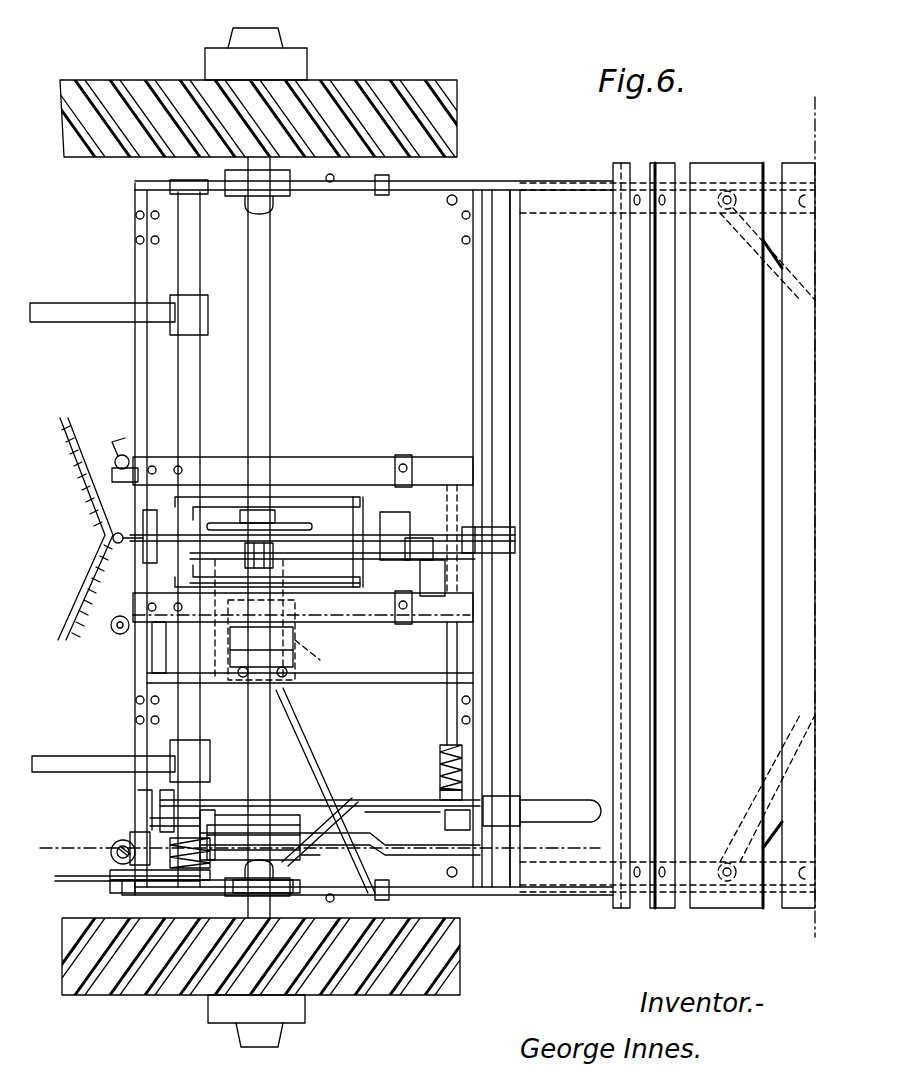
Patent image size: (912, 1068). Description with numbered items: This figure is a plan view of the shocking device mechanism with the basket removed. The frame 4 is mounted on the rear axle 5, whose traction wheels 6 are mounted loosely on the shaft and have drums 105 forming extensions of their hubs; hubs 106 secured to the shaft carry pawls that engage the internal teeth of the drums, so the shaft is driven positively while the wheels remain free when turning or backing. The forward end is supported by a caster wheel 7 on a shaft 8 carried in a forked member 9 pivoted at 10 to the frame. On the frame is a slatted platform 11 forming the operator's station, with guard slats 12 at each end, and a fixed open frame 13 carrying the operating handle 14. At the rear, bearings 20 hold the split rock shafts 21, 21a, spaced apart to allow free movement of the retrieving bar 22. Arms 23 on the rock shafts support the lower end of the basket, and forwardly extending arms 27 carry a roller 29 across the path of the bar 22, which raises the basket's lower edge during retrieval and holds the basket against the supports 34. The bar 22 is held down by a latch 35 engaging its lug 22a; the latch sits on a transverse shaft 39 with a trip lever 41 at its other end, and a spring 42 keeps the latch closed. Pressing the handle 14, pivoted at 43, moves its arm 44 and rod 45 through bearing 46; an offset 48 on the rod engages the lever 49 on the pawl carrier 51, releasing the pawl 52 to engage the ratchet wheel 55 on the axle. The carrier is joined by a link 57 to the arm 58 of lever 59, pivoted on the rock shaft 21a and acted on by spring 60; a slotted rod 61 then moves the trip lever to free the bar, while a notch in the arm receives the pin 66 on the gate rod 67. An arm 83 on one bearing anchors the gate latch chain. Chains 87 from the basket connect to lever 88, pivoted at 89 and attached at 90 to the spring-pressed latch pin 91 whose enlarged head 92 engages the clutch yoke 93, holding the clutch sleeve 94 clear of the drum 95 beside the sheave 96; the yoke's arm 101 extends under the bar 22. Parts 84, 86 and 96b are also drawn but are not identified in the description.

The frame 4 is at (135, 183).
The rear axle 5 is at (272, 242).
The traction wheels 6 is at (438, 122).
The caster wheel 7 is at (540, 848).
The shaft 8 is at (115, 537).
The forked member 9 is at (118, 628).
The pivot 10 is at (301, 604).
The platform 11 is at (782, 168).
The guard slats 12 is at (634, 165).
The fixed open frame 13 is at (520, 215).
The operating handle 14 is at (572, 806).
The bearings 20 is at (203, 457).
The rock shaft 21 is at (200, 389).
The rock shaft 21a is at (200, 726).
The retrieving bar 22 is at (188, 534).
The lug 22a is at (440, 545).
The arms 23 is at (90, 303).
The forwardly extending arms 27 is at (312, 497).
The roller 29 is at (405, 525).
The supports 34 is at (279, 457).
The latch 35 is at (432, 560).
The transverse shaft 39 is at (445, 645).
The trip lever 41 is at (440, 821).
The spring 42 is at (440, 764).
The pivot 43 is at (503, 797).
The arm 44 is at (445, 825).
The rod 45 is at (396, 800).
The bearing 46 is at (138, 792).
The offset 48 is at (148, 820).
The lever 49 is at (168, 804).
The pawl carrier 51 is at (222, 810).
The pawl 52 is at (253, 842).
The ratchet wheel 55 is at (323, 854).
The link 57 is at (190, 825).
The arm 58 is at (132, 834).
The lever 59 is at (110, 873).
The spring 60 is at (290, 892).
The rod 61 is at (401, 820).
The pin 66 is at (126, 893).
The gate rod 67 is at (112, 848).
The arm 83 is at (119, 895).
The lever 84 is at (318, 806).
The rod 86 is at (410, 845).
The chains 87 is at (79, 535).
The lever 88 is at (113, 478).
The pivot 89 is at (118, 452).
The attachment point 90 is at (117, 636).
The spring-pressed latch pin 91 is at (167, 647).
The enlarged head 92 is at (238, 620).
The clutch yoke 93 is at (261, 652).
The clutch sleeve 94 is at (298, 658).
The drum 95 is at (305, 559).
The sheave 96 is at (312, 527).
The coupling 96b is at (225, 548).
The arm 101 is at (290, 583).
The drums 105 is at (300, 60).
The hubs 106 is at (280, 46).